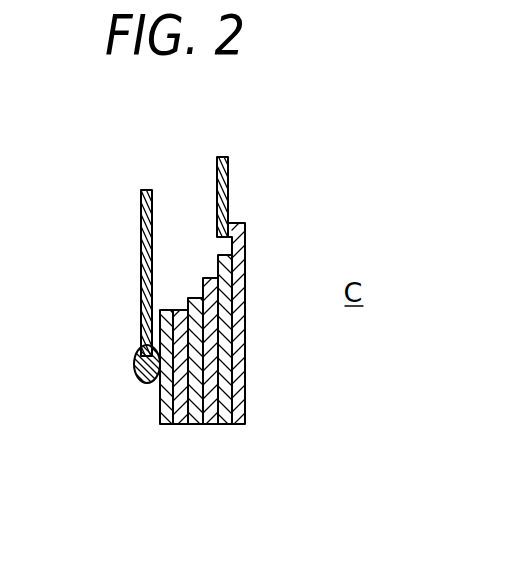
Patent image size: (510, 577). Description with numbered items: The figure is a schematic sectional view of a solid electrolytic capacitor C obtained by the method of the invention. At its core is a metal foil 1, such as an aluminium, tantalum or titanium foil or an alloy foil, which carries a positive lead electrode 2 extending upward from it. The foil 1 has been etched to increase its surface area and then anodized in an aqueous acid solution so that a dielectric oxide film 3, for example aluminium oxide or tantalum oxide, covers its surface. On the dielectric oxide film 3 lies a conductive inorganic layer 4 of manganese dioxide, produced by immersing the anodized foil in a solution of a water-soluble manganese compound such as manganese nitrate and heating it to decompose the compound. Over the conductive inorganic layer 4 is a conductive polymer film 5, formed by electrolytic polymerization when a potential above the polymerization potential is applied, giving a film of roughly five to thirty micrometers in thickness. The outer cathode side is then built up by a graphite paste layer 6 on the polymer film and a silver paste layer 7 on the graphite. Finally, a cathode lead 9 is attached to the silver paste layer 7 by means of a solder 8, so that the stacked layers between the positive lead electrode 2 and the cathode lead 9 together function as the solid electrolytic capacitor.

The metal foil 1 is at (240, 245).
The positive lead electrode 2 is at (225, 156).
The dielectric oxide film 3 is at (237, 363).
The conductive inorganic layer 4 is at (208, 424).
The conductive polymer film 5 is at (195, 424).
The graphite paste layer 6 is at (180, 424).
The silver paste layer 7 is at (168, 396).
The solder 8 is at (135, 362).
The cathode lead 9 is at (141, 225).